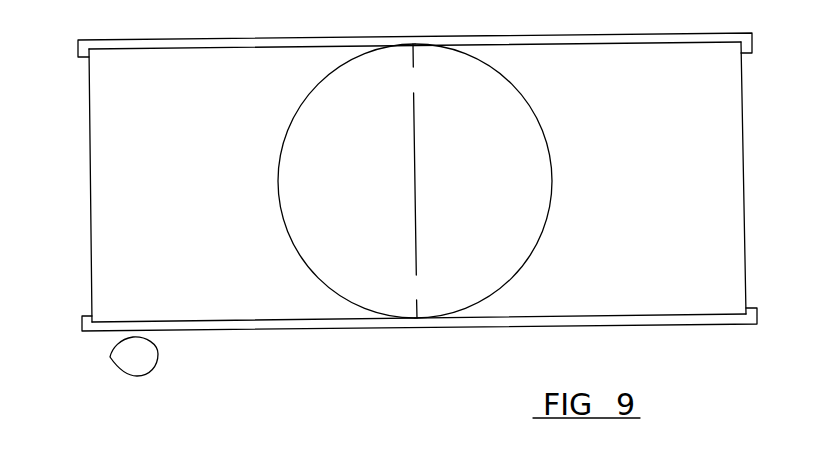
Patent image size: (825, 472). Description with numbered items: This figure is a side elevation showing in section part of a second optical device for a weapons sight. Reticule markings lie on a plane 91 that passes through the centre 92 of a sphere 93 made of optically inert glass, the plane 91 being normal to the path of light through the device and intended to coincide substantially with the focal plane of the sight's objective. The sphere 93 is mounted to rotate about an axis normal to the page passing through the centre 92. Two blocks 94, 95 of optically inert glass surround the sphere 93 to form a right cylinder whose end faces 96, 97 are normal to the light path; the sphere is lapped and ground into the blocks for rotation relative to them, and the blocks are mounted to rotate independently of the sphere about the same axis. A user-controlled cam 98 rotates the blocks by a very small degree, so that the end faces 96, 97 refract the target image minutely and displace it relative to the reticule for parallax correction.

The plane 91 is at (414, 140).
The centre 92 is at (415, 183).
The sphere 93 is at (531, 200).
The block 94 is at (218, 149).
The block 95 is at (657, 141).
The end face 96 is at (90, 202).
The end face 97 is at (742, 190).
The cam 98 is at (153, 375).